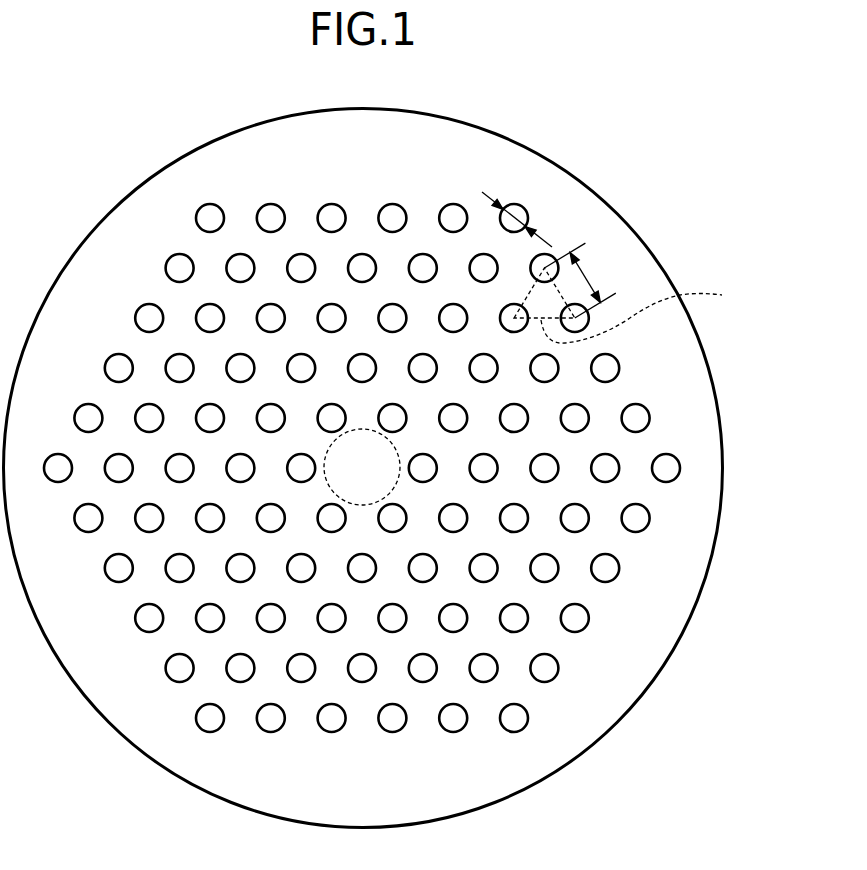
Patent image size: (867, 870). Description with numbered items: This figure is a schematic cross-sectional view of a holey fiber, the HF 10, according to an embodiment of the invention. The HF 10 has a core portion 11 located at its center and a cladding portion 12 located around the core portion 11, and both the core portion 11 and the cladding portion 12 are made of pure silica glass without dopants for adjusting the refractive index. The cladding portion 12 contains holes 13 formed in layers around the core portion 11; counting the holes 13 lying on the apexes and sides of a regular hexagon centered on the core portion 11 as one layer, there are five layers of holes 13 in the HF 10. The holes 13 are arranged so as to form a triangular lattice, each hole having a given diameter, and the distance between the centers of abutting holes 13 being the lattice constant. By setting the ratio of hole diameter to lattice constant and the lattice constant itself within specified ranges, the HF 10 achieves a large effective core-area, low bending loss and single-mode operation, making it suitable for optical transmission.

The HF 10 is at (392, 468).
The core portion 11 is at (360, 505).
The cladding portion 12 is at (590, 718).
The holes 13 is at (682, 455).